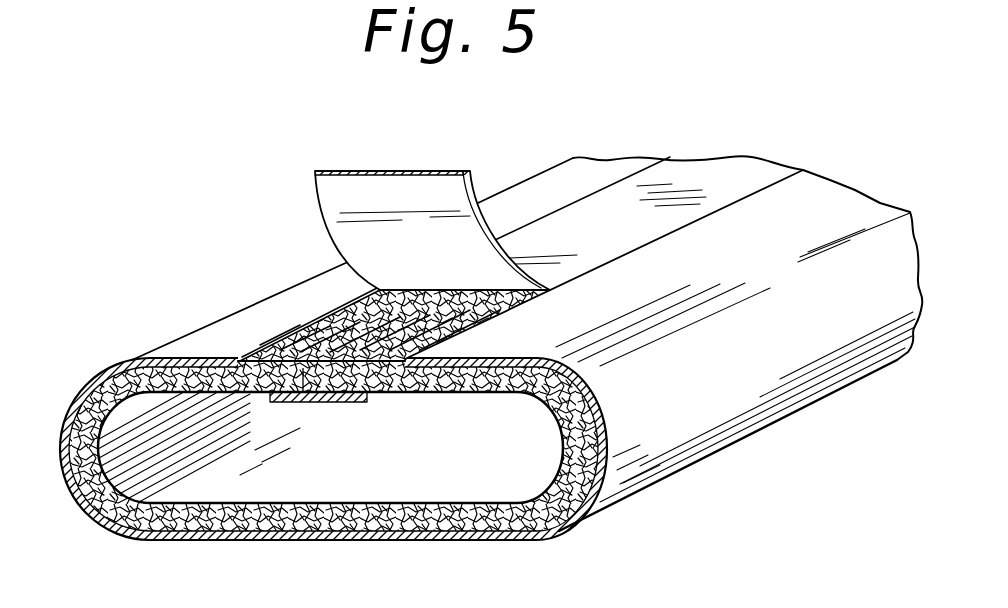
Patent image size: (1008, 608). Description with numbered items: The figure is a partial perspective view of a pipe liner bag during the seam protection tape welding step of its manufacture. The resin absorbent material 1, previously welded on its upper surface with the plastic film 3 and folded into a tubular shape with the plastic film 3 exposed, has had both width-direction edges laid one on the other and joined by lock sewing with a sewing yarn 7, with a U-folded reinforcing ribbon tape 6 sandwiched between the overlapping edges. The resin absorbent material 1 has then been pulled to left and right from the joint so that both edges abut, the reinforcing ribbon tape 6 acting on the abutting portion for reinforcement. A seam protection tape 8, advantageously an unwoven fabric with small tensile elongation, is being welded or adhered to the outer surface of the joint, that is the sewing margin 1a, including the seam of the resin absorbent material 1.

The resin absorbent material 1 is at (460, 503).
The sewing margin 1a is at (280, 357).
The plastic film 3 is at (102, 380).
The reinforcing ribbon tape 6 is at (370, 397).
The sewing yarn 7 is at (337, 333).
The seam protection tape 8 is at (338, 206).